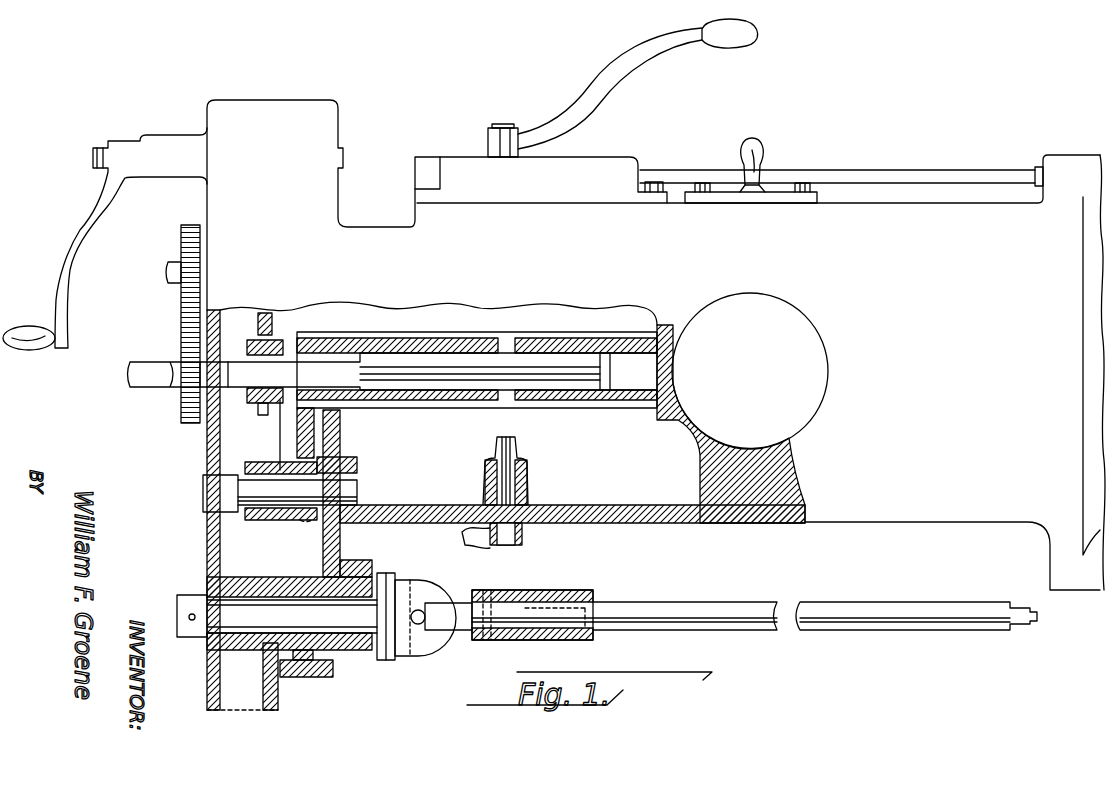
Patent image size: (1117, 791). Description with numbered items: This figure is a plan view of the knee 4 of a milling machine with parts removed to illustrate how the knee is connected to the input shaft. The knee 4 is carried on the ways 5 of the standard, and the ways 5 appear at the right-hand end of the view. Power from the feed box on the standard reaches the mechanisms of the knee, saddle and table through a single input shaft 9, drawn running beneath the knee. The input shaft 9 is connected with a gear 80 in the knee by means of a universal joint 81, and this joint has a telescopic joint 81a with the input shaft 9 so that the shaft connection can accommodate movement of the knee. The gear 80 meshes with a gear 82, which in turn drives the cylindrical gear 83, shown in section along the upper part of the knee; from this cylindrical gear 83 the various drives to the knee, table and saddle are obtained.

The knee 4 is at (875, 503).
The ways for the knee 5 is at (1093, 370).
The input shaft 9 is at (745, 620).
The gear 80 is at (310, 645).
The universal joint 81 is at (423, 648).
The telescopic joint 81a is at (500, 640).
The gear 82 is at (296, 542).
The cylindrical gear 83 is at (415, 403).